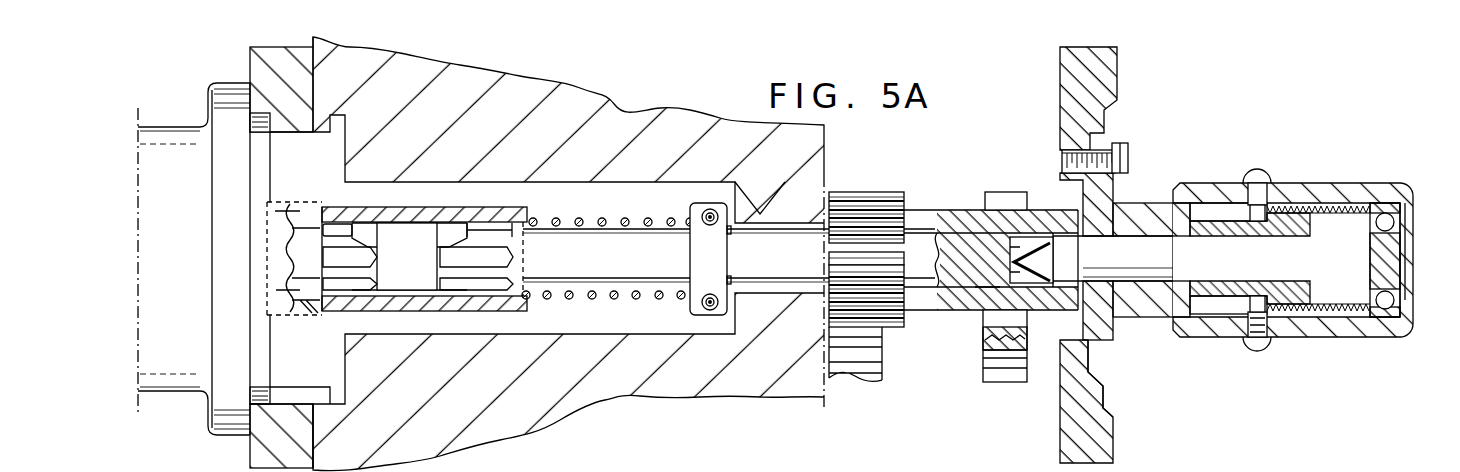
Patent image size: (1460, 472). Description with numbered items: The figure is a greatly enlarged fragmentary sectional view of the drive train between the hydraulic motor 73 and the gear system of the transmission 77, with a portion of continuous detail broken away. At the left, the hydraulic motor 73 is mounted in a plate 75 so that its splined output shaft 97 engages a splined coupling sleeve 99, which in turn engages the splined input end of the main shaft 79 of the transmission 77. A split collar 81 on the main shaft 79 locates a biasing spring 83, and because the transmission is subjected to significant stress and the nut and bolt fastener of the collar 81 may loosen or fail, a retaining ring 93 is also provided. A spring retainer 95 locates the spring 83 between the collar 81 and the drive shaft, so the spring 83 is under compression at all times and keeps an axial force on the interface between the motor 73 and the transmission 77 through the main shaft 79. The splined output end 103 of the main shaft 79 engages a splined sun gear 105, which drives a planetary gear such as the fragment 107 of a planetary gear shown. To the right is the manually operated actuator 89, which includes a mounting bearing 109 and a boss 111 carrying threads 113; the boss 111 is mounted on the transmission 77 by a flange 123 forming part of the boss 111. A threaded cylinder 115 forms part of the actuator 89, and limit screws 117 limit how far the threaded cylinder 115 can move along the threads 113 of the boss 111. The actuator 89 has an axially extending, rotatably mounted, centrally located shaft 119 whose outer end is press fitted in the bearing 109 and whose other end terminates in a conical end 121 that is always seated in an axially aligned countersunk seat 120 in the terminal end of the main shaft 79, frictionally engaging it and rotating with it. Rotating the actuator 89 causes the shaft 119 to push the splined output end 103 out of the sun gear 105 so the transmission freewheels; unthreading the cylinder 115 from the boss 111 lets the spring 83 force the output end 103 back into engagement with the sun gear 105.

The hydraulic motor 73 is at (155, 128).
The plate 75 is at (228, 83).
The transmission 77 is at (627, 102).
The main shaft 79 is at (771, 265).
The collar 81 is at (690, 212).
The biasing spring 83 is at (570, 300).
The manually operated actuator 89 is at (1333, 183).
The retaining ring 93 is at (740, 222).
The spring retainer 95 is at (523, 210).
The splined output shaft 97 is at (300, 237).
The splined coupling sleeve 99 is at (403, 200).
The splined output end 103 is at (950, 245).
The splined sun gear 105 is at (1008, 192).
The planetary gear fragment 107 is at (1003, 372).
The mounting bearing 109 is at (1404, 219).
The boss 111 is at (1153, 200).
The threads 113 is at (1287, 203).
The threaded cylinder 115 is at (1327, 338).
The limit screws 117 is at (1250, 170).
The shaft 119 is at (1235, 263).
The countersunk seat 120 is at (988, 296).
The conical end 121 is at (1053, 259).
The flange 123 is at (1117, 362).